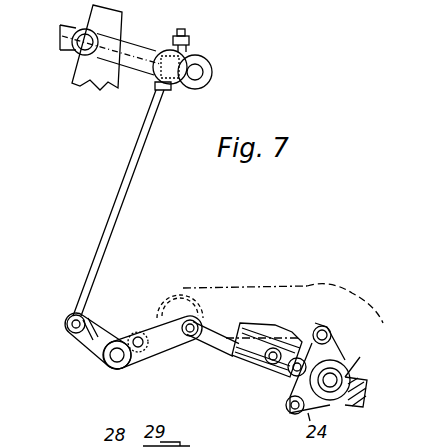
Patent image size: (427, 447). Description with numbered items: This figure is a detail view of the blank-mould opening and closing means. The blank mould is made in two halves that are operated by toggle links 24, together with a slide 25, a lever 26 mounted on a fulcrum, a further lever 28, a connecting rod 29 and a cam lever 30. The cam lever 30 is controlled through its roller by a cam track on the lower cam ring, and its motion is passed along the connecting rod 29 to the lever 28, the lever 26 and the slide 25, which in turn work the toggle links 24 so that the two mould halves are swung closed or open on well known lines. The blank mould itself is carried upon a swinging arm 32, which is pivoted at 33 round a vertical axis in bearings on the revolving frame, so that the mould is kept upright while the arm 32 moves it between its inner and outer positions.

The toggle links 24 is at (305, 347).
The slide 25 is at (273, 373).
The lever 26 is at (163, 352).
The lever 28 is at (102, 338).
The connecting rod 29 is at (118, 208).
The cam lever 30 is at (140, 48).
The swinging arm 32 is at (247, 287).
The pivot 33 is at (183, 293).